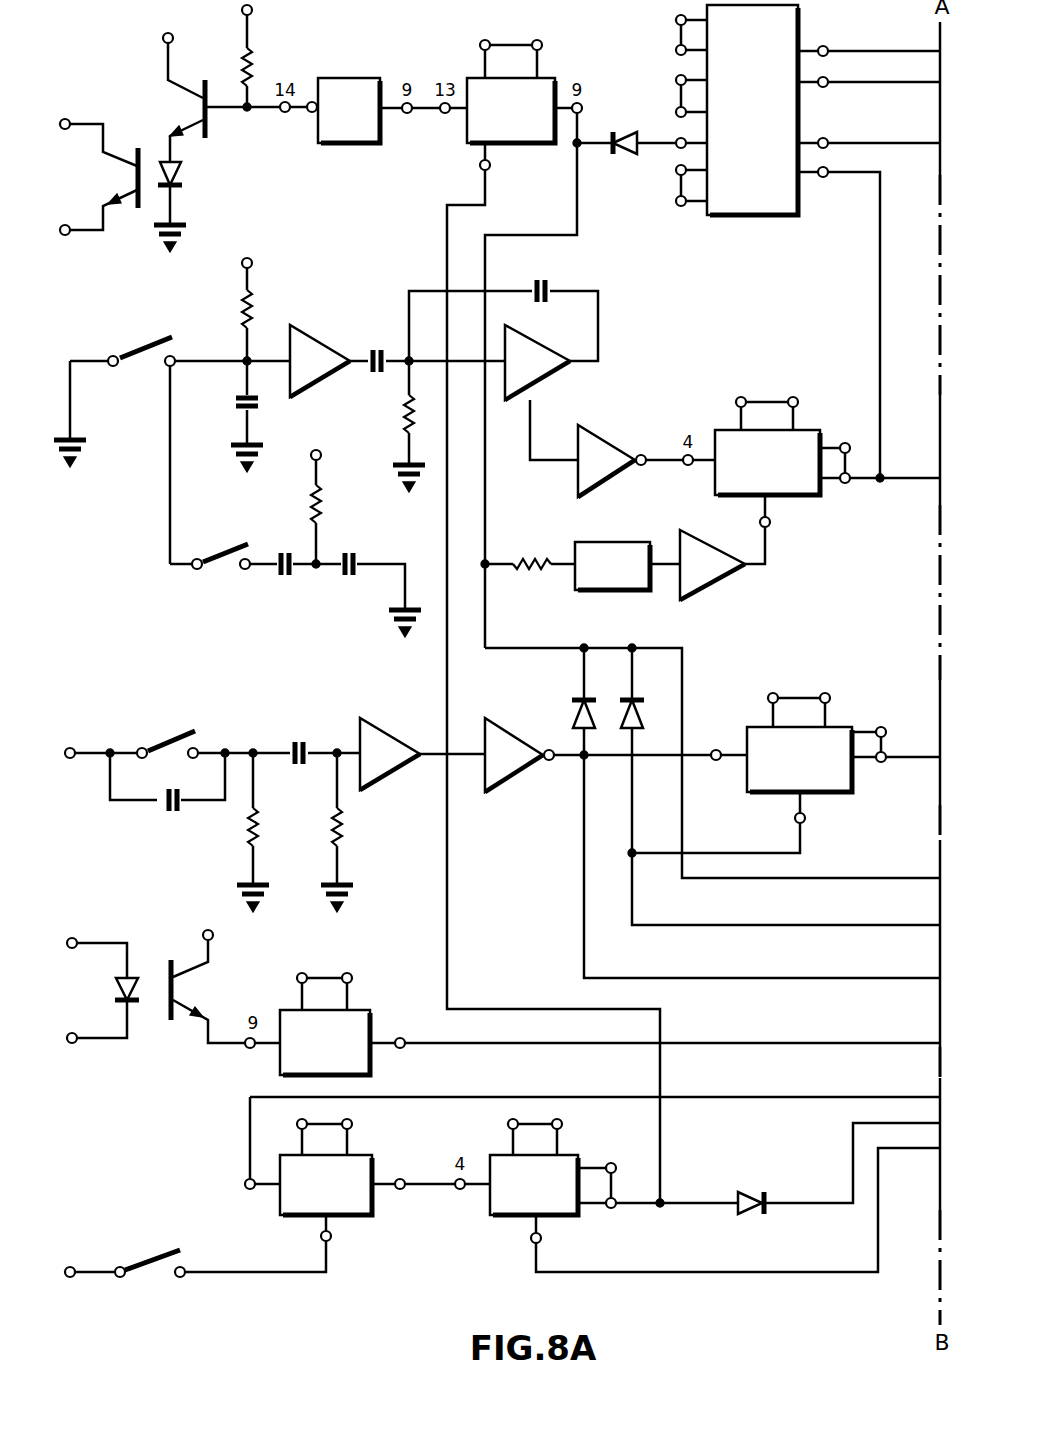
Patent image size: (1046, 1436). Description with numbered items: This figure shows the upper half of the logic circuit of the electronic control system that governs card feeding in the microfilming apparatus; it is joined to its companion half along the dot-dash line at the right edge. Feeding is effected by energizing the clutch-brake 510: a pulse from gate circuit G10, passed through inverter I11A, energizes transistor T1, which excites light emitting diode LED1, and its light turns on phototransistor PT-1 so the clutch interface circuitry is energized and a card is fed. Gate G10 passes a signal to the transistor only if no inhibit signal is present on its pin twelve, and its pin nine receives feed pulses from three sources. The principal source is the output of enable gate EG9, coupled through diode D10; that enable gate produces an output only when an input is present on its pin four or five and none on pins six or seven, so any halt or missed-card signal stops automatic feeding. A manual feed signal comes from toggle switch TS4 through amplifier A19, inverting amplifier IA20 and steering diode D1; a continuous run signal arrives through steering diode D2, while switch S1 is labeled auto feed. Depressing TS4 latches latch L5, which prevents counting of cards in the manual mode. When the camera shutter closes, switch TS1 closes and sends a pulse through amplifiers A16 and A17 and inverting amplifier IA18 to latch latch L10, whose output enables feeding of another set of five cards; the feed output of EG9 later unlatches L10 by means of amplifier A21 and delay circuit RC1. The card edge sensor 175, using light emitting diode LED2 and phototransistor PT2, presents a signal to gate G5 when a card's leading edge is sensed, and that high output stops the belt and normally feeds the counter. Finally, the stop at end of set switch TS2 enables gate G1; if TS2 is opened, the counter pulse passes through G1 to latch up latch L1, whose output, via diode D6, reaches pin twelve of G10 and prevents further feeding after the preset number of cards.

The clutch-brake 510 is at (66, 242).
The phototransistor PT-1 is at (134, 178).
The transistor T1 is at (214, 132).
The light emitting diode LED1 is at (184, 170).
The inverter circuit I11A is at (349, 110).
The gate circuit G10 is at (511, 97).
The diode D10 is at (616, 131).
The enable gate circuit EG9 is at (757, 214).
The camera shutter switch TS1 is at (148, 347).
The amplifier A16 is at (318, 327).
The amplifier A17 is at (555, 378).
The inverting amplifier IA18 is at (612, 447).
The latch circuit L10 is at (827, 469).
The delay circuit RC1 is at (608, 541).
The amplifier A21 is at (712, 588).
The auto feed switch S1 is at (222, 558).
The steering diode D1 is at (572, 714).
The steering diode D2 is at (640, 714).
The manual feed toggle switch TS4 is at (172, 744).
The amplifier A19 is at (392, 724).
The inverting amplifier IA20 is at (516, 790).
The latch circuit L5 is at (825, 750).
The card edge sensor 175 is at (66, 1050).
The light emitting diode LED2 is at (138, 1004).
The phototransistor PT2 is at (188, 992).
The gate circuit G5 is at (345, 1012).
The gate circuit G1 is at (298, 1193).
The latch circuit L1 is at (715, 1193).
The diode D6 is at (746, 1190).
The stop at end of set switch TS2 is at (158, 1258).